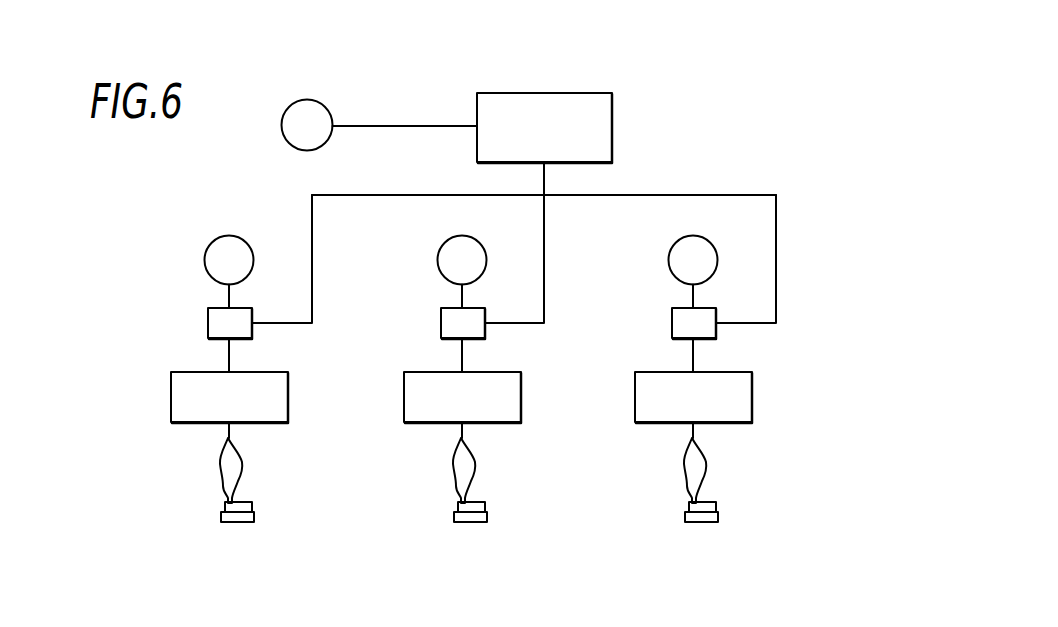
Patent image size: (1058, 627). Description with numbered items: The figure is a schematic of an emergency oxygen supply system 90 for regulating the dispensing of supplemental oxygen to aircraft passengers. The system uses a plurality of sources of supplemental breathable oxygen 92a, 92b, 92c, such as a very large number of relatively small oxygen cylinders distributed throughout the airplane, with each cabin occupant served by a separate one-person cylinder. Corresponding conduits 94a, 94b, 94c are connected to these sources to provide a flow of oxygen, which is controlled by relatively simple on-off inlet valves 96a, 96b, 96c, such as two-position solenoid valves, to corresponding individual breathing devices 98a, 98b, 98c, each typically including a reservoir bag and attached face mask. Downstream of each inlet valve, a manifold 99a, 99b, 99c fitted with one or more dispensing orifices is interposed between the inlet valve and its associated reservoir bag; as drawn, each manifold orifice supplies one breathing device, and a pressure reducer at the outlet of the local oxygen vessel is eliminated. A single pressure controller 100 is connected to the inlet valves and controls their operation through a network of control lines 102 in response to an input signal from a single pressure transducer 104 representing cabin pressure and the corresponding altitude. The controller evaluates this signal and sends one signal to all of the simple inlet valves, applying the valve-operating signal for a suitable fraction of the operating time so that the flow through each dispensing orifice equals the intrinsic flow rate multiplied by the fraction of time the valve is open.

The emergency oxygen supply system 90 is at (672, 74).
The source of supplemental breathable oxygen 92a is at (214, 240).
The source of supplemental breathable oxygen 92b is at (435, 248).
The source of supplemental breathable oxygen 92c is at (666, 248).
The conduit 94a is at (229, 292).
The conduit 94b is at (419, 285).
The conduit 94c is at (650, 285).
The on-off inlet valve 96a is at (208, 322).
The on-off inlet valve 96b is at (420, 314).
The on-off inlet valve 96c is at (651, 314).
The individual breathing device 98a is at (199, 514).
The individual breathing device 98b is at (410, 505).
The individual breathing device 98c is at (641, 505).
The manifold 99a is at (171, 397).
The manifold 99b is at (427, 397).
The manifold 99c is at (658, 397).
The pressure controller 100 is at (528, 93).
The network of control lines 102 is at (395, 195).
The pressure transducer 104 is at (282, 121).